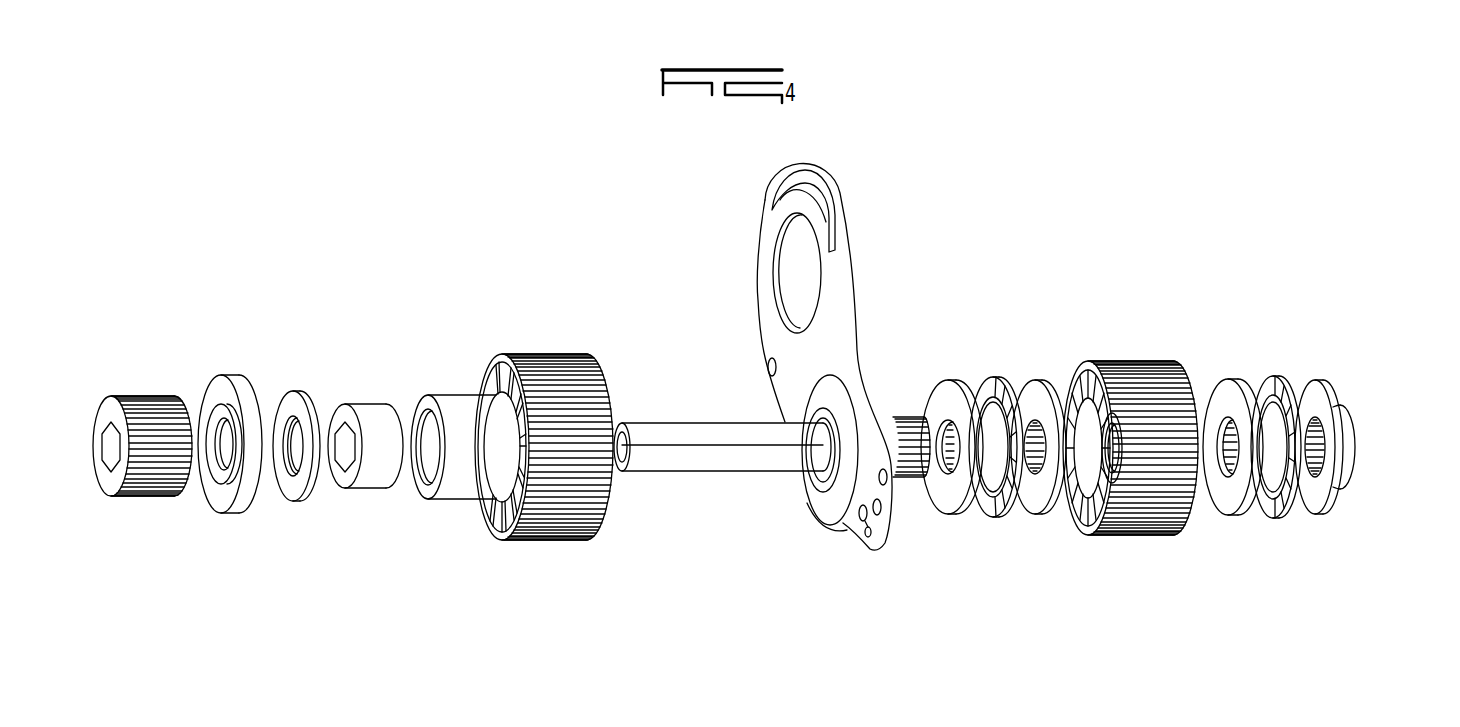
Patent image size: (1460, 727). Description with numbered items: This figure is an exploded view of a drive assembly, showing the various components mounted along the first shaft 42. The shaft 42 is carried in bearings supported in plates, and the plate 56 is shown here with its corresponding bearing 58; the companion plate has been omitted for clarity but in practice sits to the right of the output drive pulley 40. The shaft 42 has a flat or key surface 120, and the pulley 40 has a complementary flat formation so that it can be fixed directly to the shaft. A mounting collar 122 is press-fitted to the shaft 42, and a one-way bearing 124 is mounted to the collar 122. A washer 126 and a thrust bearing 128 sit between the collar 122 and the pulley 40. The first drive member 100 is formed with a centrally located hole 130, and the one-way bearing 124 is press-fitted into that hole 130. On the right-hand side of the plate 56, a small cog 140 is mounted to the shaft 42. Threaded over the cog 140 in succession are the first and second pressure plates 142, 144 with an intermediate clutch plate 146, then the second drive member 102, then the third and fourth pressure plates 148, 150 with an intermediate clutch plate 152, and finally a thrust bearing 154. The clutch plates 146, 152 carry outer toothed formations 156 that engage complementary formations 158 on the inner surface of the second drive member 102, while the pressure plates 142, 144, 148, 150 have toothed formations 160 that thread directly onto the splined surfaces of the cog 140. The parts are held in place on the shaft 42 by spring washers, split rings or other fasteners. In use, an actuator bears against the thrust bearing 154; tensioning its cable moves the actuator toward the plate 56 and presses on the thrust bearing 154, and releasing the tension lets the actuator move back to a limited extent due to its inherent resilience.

The output drive pulley 40 is at (112, 487).
The thrust bearing 128 is at (235, 508).
The washer 126 is at (297, 487).
The mounting collar 122 is at (387, 477).
The one-way bearing 124 is at (463, 490).
The first drive member 100 is at (544, 438).
The centrally located hole 130 is at (508, 575).
The flat or key surface 120 is at (722, 451).
The first shaft 42 is at (707, 507).
The plate 56 is at (797, 167).
The bearing 58 is at (830, 503).
The small cog 140 is at (918, 483).
The first pressure plate 142 is at (945, 392).
The toothed formations 160 is at (938, 577).
The clutch plate 146 is at (982, 383).
The outer toothed formations 156 is at (1008, 590).
The second pressure plate 144 is at (1032, 393).
The complementary formations 158 is at (1065, 587).
The second drive member 102 is at (1127, 489).
The third pressure plate 148 is at (1230, 497).
The clutch plate 152 is at (1275, 503).
The fourth pressure plate 150 is at (1323, 500).
The thrust bearing 154 is at (1353, 437).